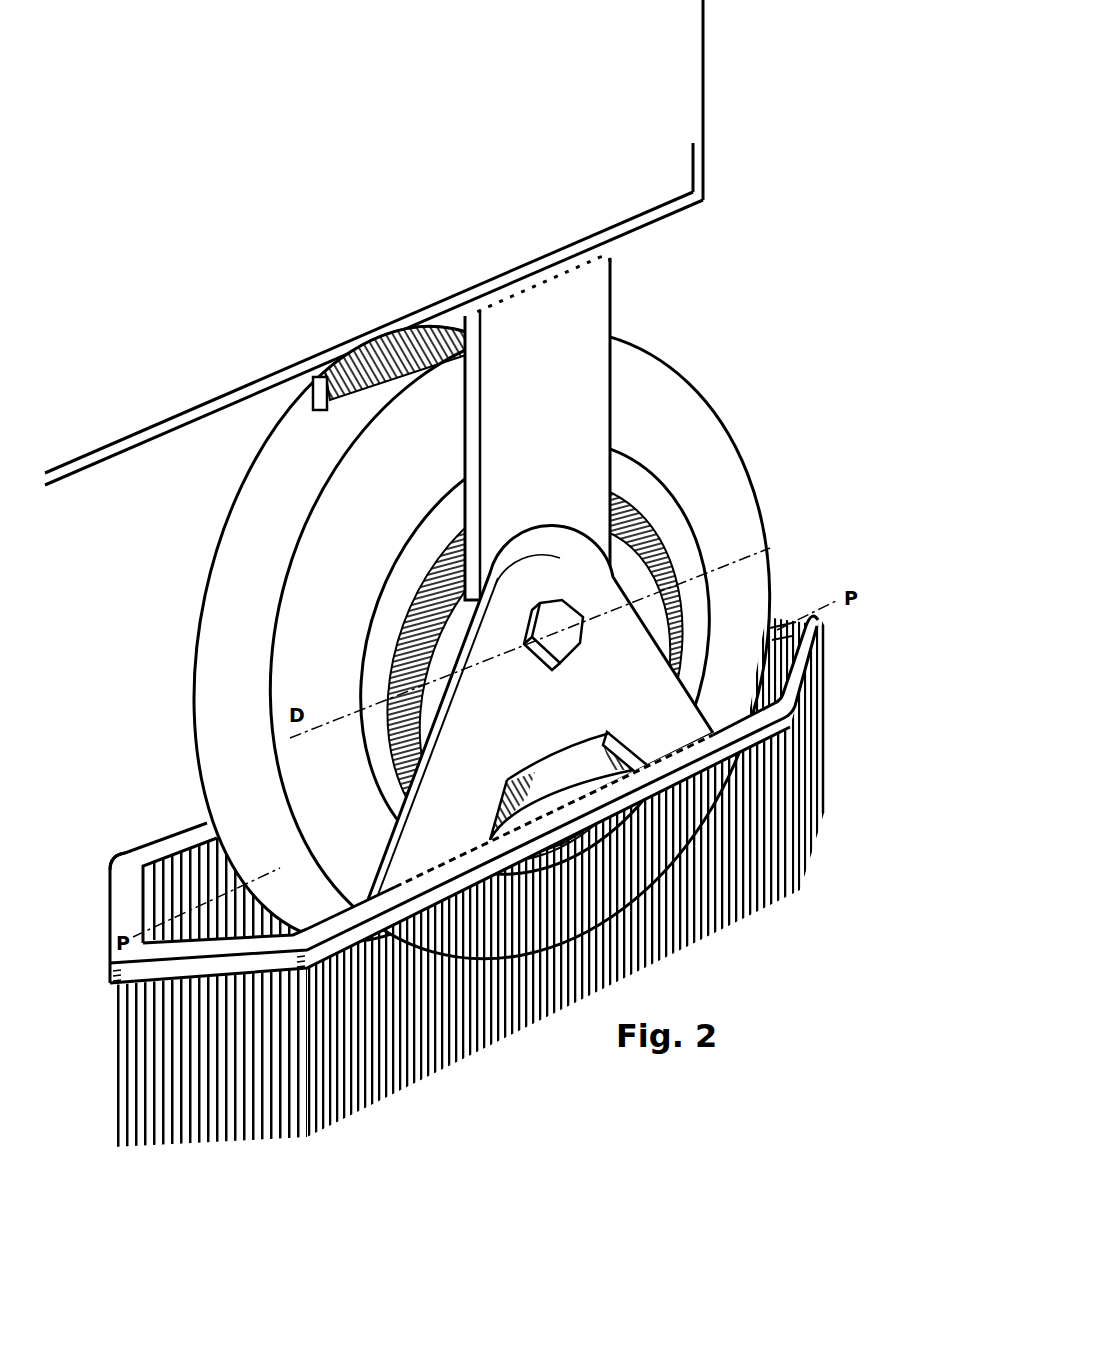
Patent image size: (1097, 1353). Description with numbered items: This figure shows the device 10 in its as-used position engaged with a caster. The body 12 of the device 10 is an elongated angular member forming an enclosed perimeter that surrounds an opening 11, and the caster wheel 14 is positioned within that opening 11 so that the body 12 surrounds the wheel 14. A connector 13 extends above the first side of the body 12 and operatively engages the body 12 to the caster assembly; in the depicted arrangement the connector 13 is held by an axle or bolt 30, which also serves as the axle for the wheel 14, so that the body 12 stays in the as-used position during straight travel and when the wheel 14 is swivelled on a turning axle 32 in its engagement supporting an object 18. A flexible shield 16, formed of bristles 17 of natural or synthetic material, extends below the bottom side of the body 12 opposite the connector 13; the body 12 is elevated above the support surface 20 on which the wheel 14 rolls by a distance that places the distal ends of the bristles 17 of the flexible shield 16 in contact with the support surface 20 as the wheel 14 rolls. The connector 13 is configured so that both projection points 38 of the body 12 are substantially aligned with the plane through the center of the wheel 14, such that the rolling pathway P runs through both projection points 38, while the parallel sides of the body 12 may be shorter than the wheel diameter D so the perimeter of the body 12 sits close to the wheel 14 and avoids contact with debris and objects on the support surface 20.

The device 10 is at (798, 585).
The opening 11 is at (188, 862).
The body 12 is at (204, 823).
The connector 13 is at (590, 307).
The caster wheel 14 is at (665, 400).
The flexible shield 16 is at (262, 1095).
The bristles 17 is at (462, 1040).
The object 18 is at (705, 103).
The support surface 20 is at (778, 942).
The bolt 30 is at (565, 637).
The turning axle 32 is at (540, 268).
The projection points 38 is at (112, 953).